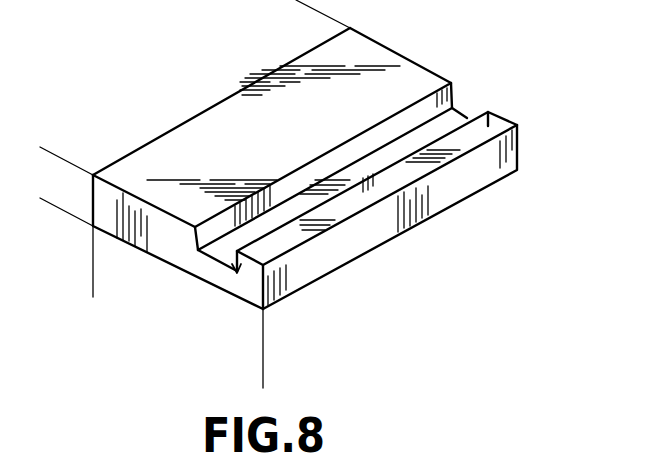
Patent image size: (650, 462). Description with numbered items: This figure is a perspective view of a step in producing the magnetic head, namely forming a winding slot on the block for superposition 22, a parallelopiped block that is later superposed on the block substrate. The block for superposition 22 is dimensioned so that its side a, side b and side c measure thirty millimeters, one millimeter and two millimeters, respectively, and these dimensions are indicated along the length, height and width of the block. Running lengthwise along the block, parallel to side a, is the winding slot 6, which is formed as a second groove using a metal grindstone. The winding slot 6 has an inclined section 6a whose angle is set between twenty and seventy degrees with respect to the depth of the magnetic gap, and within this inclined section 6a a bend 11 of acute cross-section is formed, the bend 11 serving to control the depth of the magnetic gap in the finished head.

The winding slot 6 is at (208, 254).
The inclined section 6a is at (267, 271).
The bend 11 is at (240, 270).
The block for superposition 22 is at (520, 155).
The side a is at (300, 5).
The side b is at (48, 148).
The side c is at (263, 374).